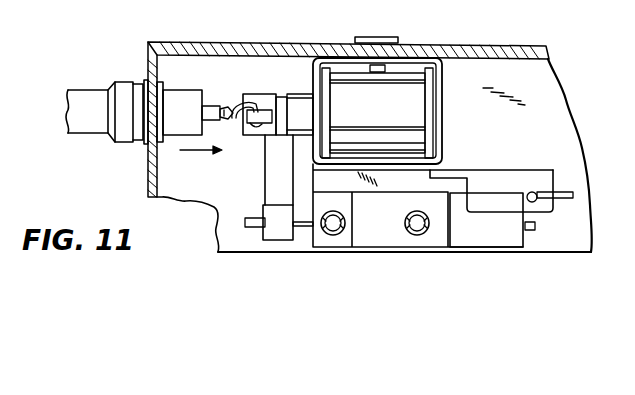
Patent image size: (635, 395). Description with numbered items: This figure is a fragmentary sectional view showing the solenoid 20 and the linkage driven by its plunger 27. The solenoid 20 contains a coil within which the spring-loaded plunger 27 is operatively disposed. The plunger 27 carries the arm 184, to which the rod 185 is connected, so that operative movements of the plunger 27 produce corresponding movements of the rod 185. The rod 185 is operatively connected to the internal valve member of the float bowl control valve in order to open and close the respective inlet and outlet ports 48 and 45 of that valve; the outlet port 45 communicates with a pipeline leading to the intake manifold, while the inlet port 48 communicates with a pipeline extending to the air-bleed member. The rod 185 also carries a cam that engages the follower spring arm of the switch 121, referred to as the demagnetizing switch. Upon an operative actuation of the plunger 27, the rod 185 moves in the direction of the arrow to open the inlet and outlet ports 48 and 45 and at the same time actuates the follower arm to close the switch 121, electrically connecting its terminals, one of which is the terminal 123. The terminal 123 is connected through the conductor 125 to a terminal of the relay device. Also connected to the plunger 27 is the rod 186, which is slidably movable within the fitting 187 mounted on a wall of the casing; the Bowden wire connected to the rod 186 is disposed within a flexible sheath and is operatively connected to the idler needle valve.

The solenoid 20 is at (398, 113).
The plunger 27 is at (260, 94).
The outlet port 45 is at (338, 231).
The inlet port 48 is at (425, 231).
The switch 121 is at (518, 184).
The terminal 123 is at (529, 200).
The conductor 125 is at (568, 203).
The arm 184 is at (273, 166).
The rod 185 is at (303, 228).
The rod 186 is at (210, 106).
The fitting 187 is at (175, 128).